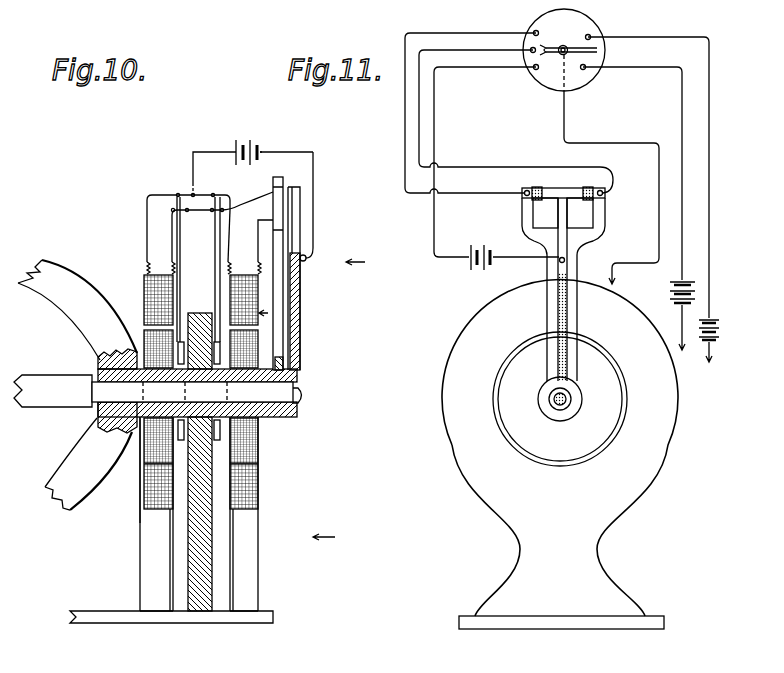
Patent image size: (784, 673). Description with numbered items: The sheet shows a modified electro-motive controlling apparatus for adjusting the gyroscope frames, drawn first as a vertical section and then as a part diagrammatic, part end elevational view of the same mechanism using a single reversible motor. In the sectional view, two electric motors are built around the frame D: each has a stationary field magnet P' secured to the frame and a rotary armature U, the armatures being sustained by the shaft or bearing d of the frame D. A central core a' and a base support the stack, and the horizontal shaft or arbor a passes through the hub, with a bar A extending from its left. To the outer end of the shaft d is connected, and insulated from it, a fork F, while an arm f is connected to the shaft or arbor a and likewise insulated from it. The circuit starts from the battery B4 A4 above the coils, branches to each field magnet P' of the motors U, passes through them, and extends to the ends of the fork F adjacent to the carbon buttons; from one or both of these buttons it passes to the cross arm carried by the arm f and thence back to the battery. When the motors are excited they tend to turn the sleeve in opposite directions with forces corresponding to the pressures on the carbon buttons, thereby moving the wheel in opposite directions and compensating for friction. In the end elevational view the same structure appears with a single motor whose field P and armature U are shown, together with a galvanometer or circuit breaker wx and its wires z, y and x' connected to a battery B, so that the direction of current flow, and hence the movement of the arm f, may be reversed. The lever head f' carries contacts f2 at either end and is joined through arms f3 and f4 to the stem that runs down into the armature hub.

In FIG. 10, the frame D is at (53, 272).
In FIG. 10, the shaft bar / battery A is at (50, 396).
In FIG. 11, the shaft bar / battery A is at (597, 199).
In FIG. 10, the shaft or arbor a is at (197, 391).
In FIG. 10, the shaft or bearing d is at (140, 417).
In FIG. 10, the core a' is at (241, 462).
In FIG. 10, the rotary armature U is at (139, 333).
In FIG. 11, the rotary armature U is at (560, 399).
In FIG. 10, the stationary field magnet P' is at (219, 394).
In FIG. 10, the fork F is at (290, 300).
In FIG. 11, the fork F is at (552, 309).
In FIG. 10, the arm f is at (315, 206).
In FIG. 11, the arm f is at (570, 289).
In FIG. 10, the battery B4 is at (240, 138).
In FIG. 10, the battery A4 is at (230, 275).
In FIG. 11, the switch wx is at (591, 146).
In FIG. 11, the wire z is at (470, 113).
In FIG. 11, the wire y is at (516, 112).
In FIG. 11, the wire x' is at (496, 171).
In FIG. 11, the battery B is at (477, 247).
In FIG. 11, the lever head f' is at (563, 184).
In FIG. 11, the contacts f2 is at (551, 184).
In FIG. 11, the left arm f3 is at (533, 218).
In FIG. 11, the right arm f4 is at (604, 214).
In FIG. 11, the frame P is at (541, 454).